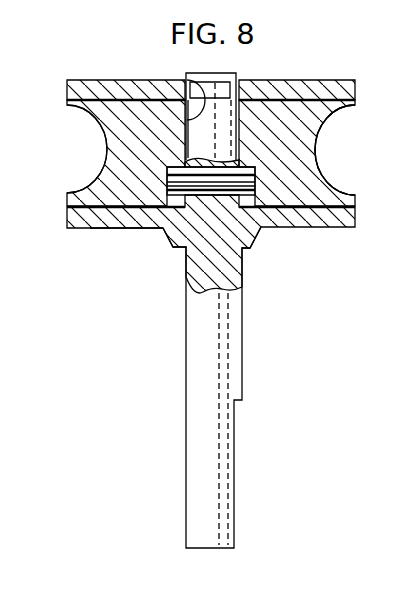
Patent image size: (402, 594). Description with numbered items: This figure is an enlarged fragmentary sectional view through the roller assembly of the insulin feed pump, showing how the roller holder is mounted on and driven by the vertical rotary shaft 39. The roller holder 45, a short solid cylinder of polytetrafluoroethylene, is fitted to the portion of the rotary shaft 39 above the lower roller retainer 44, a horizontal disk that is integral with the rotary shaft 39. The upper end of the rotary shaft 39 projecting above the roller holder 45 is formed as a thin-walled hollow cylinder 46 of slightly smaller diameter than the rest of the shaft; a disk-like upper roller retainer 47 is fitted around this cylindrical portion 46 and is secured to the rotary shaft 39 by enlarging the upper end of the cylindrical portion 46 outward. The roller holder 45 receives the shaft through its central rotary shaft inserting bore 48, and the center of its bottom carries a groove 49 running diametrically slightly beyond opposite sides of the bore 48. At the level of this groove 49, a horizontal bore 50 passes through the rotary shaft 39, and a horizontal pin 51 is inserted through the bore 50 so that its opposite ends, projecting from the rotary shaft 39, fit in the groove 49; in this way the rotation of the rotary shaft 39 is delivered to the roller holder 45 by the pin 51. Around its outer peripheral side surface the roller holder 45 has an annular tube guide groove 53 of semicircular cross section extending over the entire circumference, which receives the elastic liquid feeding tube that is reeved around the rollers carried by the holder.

The rotary shaft 39 is at (186, 436).
The roller retainer 44 is at (83, 222).
The roller holder 45 is at (127, 117).
The hollow cylinder 46 is at (238, 73).
The roller retainer 47 is at (83, 88).
The rotary shaft inserting bore 48 is at (185, 74).
The groove 49 is at (170, 172).
The horizontal bore 50 is at (256, 240).
The horizontal pin 51 is at (133, 222).
The annular tube guide groove 53 is at (316, 140).